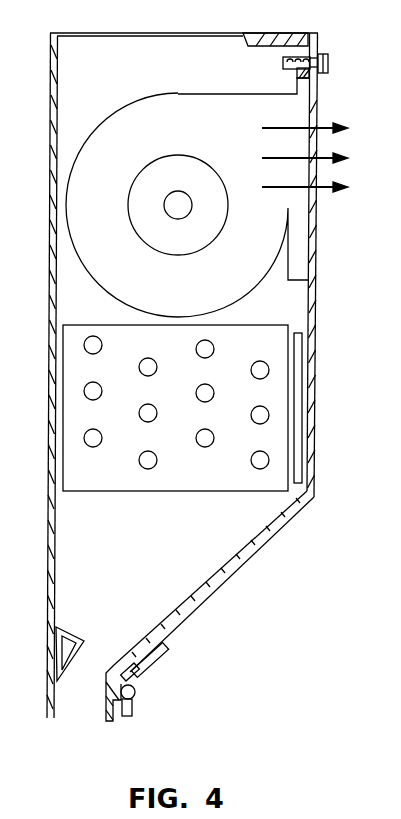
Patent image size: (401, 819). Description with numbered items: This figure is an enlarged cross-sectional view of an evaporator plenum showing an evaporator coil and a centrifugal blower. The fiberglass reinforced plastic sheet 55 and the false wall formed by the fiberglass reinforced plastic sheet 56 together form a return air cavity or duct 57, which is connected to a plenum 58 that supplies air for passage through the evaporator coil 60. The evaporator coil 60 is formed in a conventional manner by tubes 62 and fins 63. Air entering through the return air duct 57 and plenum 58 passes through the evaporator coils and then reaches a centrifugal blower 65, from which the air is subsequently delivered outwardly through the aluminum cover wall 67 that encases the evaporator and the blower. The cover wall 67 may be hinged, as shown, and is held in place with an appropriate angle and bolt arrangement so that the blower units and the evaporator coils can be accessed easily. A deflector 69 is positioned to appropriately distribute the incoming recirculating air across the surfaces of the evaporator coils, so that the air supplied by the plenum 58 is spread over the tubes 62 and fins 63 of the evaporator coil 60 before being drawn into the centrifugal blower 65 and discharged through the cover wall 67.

The fiberglass reinforced plastic sheet 55 is at (47, 717).
The fiberglass reinforced plastic sheet 56 is at (113, 715).
The return air cavity or duct 57 is at (90, 692).
The plenum 58 is at (189, 357).
The evaporator coil 60 is at (165, 494).
The tubes 62 is at (252, 462).
The fins 63 is at (103, 463).
The centrifugal blower 65 is at (248, 268).
The aluminum cover wall 67 is at (318, 226).
The deflector 69 is at (58, 628).